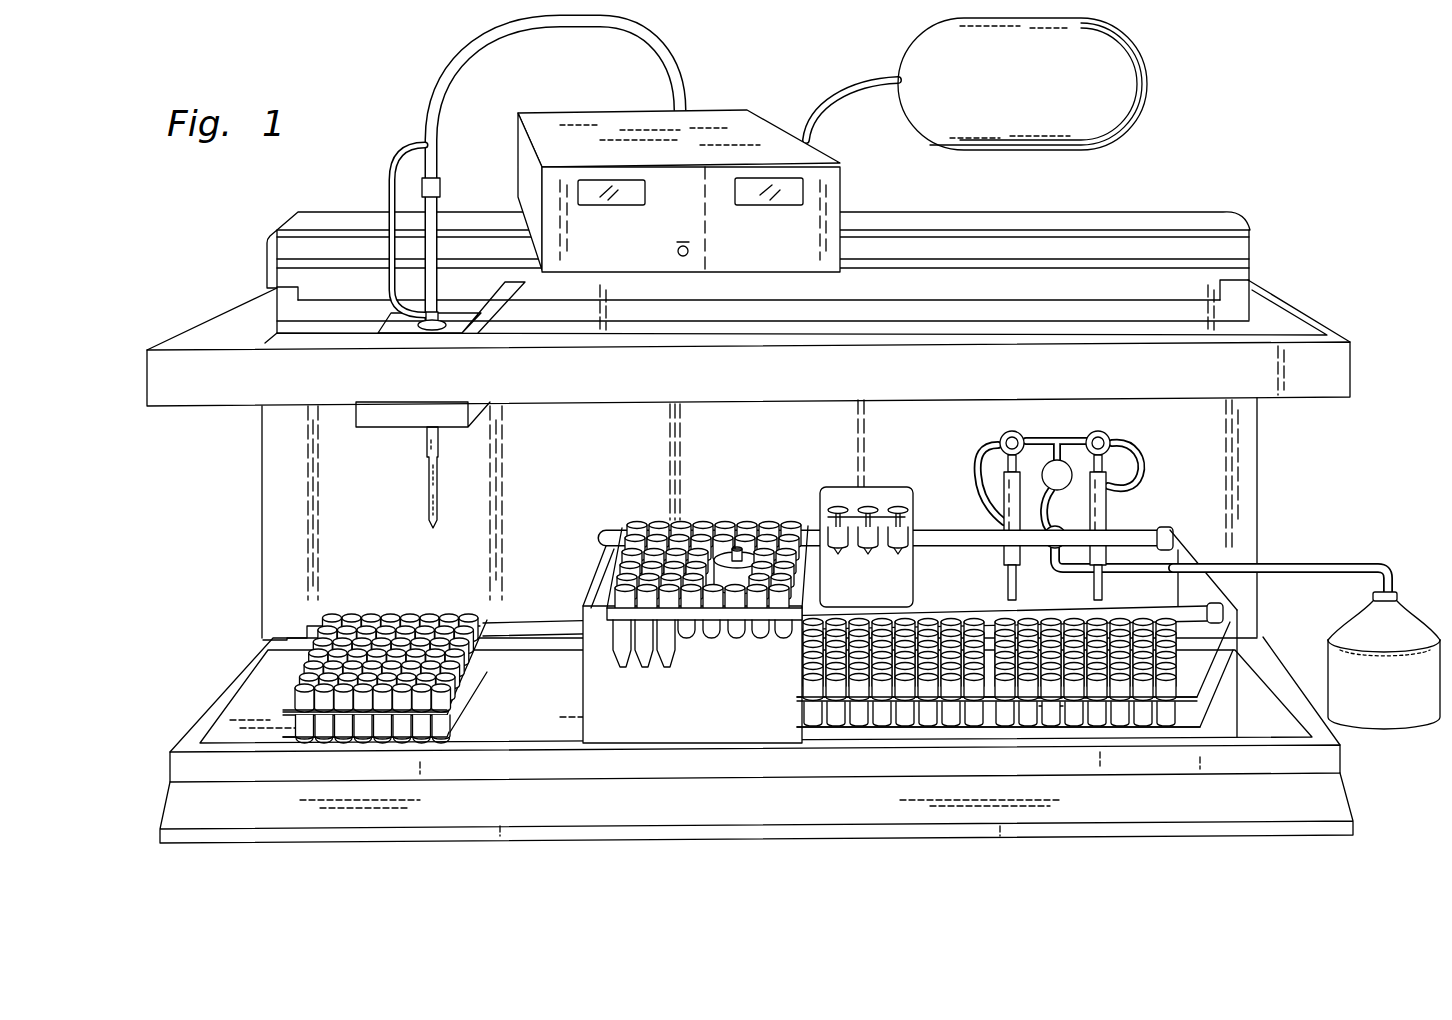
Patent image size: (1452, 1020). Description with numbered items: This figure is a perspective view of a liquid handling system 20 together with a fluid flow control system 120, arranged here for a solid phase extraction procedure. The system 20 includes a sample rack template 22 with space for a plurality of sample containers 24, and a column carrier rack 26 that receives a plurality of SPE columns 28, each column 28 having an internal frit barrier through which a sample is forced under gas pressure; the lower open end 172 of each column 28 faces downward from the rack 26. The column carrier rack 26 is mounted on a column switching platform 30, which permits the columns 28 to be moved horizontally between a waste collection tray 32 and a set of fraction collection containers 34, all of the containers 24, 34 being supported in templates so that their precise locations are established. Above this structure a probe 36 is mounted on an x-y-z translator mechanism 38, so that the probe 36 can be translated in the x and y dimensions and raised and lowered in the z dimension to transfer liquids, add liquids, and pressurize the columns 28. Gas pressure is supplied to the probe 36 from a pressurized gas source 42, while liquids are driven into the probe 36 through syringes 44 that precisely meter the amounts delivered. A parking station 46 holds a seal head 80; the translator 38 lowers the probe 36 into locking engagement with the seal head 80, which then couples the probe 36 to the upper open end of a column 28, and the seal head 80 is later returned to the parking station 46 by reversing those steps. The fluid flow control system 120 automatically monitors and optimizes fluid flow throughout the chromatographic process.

The liquid handling system 20 is at (362, 187).
The sample rack template 22 is at (320, 740).
The sample containers 24 is at (290, 708).
The column carrier rack 26 is at (740, 610).
The SPE column 28 is at (631, 680).
The column switching platform 30 is at (1180, 625).
The waste collection tray 32 is at (672, 735).
The fraction collection containers 34 is at (893, 725).
The probe 36 is at (428, 481).
The x-y-z translator mechanism 38 is at (235, 325).
The pressurized gas source 42 is at (1150, 115).
The syringes 44 is at (1005, 522).
The parking station 46 is at (1410, 615).
The seal head 80 is at (820, 530).
The fluid flow control system 120 is at (716, 112).
The lower open end 172 is at (672, 660).